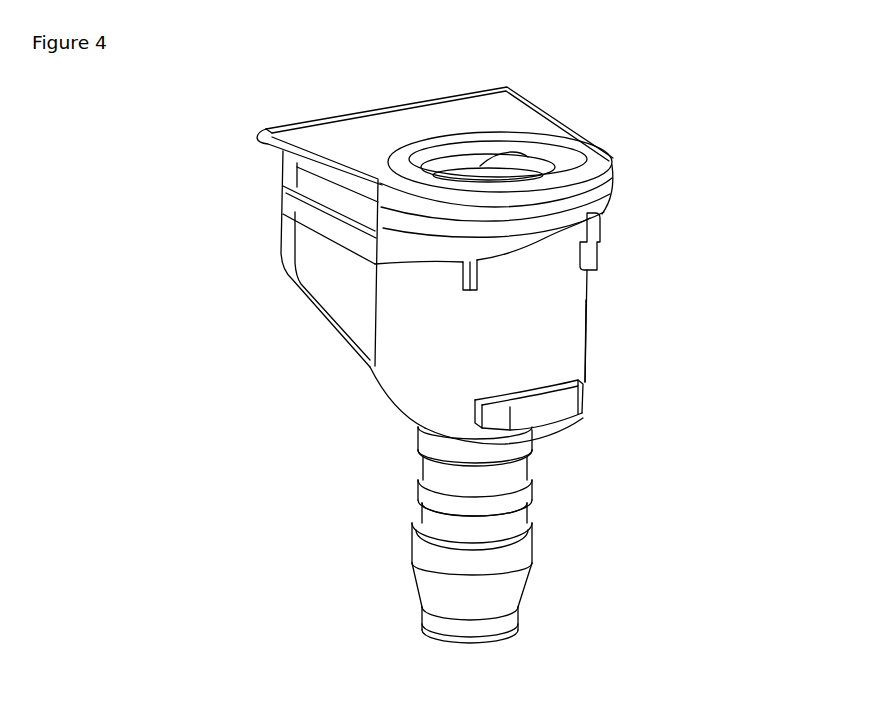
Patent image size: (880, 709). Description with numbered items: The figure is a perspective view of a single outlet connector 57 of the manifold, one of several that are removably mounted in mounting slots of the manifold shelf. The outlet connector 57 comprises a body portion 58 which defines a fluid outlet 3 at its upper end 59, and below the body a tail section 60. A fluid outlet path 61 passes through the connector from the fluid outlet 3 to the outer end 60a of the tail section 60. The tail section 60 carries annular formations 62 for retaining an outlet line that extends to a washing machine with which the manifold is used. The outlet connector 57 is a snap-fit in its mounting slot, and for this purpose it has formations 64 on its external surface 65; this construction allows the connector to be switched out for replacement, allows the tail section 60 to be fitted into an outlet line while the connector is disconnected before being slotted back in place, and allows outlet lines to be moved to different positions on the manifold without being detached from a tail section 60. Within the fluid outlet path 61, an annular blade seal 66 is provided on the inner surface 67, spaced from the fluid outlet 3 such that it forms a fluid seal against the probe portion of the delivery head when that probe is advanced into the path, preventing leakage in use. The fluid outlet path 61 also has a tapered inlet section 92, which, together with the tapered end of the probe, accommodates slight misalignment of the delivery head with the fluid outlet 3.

The outlet connector 57 is at (204, 122).
The fluid outlet 3 is at (540, 142).
The fluid outlet path 61 is at (583, 162).
The upper end 59 is at (587, 160).
The formations 64 is at (600, 243).
The body portion 58 is at (587, 290).
The external surface 65 is at (587, 317).
The tail section 60 is at (531, 462).
The annular formations 62 is at (531, 490).
The outer end 60a is at (517, 640).
The inner surface 67 is at (438, 165).
The annular blade seal 66 is at (464, 165).
The tapered inlet section 92 is at (498, 146).